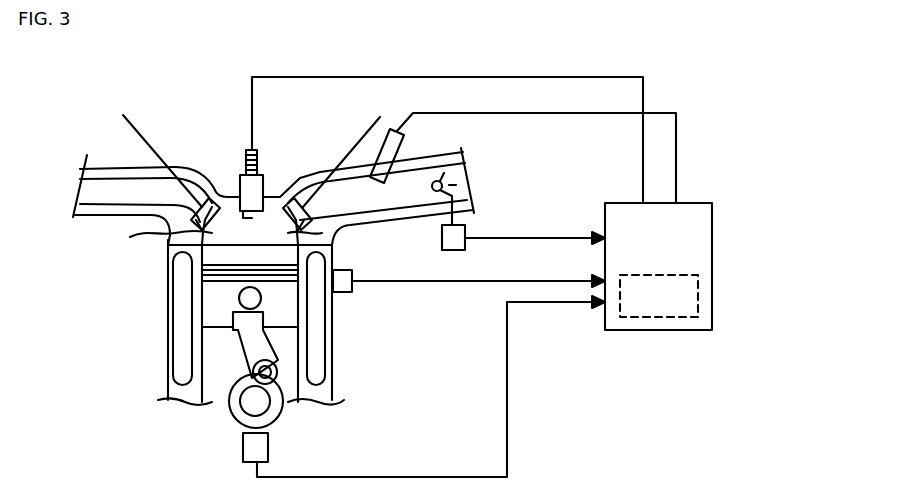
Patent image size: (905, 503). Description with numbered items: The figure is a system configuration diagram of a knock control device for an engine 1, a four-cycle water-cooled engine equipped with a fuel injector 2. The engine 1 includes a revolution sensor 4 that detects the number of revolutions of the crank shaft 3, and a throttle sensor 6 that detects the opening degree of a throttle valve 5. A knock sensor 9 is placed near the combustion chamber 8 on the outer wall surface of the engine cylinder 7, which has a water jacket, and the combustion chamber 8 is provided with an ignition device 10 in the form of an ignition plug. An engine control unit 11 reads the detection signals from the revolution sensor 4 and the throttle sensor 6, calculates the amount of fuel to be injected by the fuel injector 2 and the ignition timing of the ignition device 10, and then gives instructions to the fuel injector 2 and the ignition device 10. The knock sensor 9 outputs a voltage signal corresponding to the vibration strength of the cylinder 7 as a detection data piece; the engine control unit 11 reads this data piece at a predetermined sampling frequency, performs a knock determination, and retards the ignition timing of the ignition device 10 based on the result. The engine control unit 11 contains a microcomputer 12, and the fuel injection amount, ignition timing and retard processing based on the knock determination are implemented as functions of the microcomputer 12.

The engine 1 is at (153, 328).
The fuel injector 2 is at (402, 147).
The crank shaft 3 is at (257, 404).
The revolution sensor 4 is at (243, 447).
The throttle valve 5 is at (430, 195).
The throttle sensor 6 is at (468, 228).
The engine cylinder 7 is at (332, 340).
The combustion chamber 8 is at (128, 238).
The knock sensor 9 is at (348, 295).
The ignition device 10 is at (238, 188).
The engine control unit 11 is at (712, 223).
The microcomputer 12 is at (698, 297).